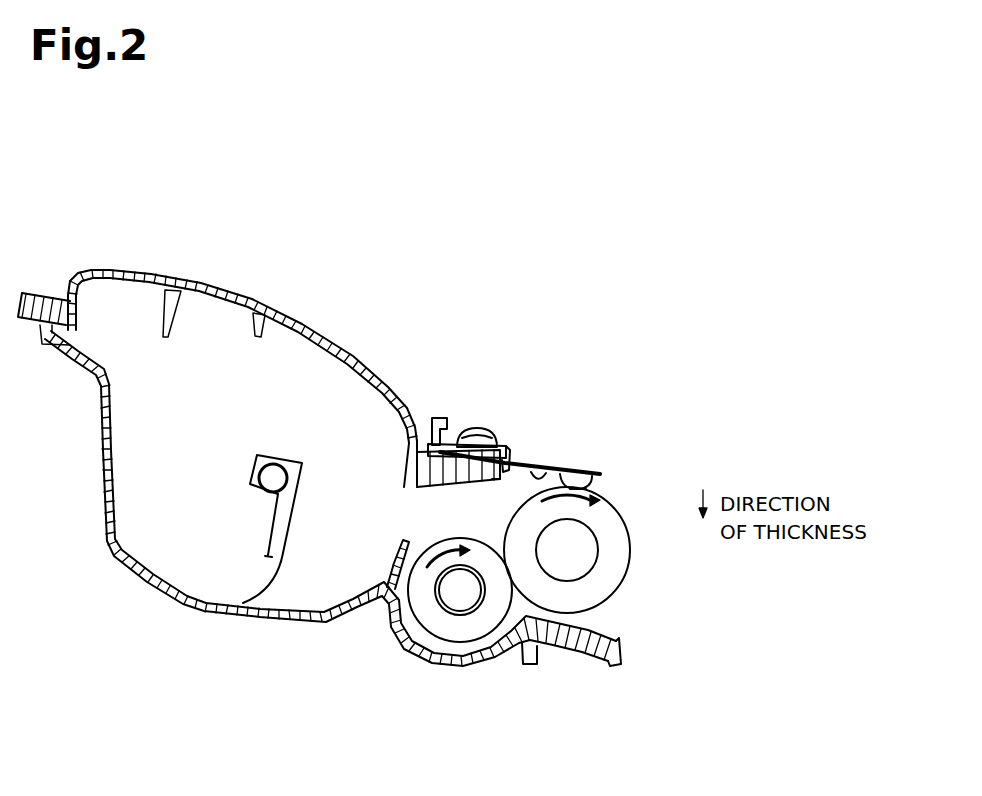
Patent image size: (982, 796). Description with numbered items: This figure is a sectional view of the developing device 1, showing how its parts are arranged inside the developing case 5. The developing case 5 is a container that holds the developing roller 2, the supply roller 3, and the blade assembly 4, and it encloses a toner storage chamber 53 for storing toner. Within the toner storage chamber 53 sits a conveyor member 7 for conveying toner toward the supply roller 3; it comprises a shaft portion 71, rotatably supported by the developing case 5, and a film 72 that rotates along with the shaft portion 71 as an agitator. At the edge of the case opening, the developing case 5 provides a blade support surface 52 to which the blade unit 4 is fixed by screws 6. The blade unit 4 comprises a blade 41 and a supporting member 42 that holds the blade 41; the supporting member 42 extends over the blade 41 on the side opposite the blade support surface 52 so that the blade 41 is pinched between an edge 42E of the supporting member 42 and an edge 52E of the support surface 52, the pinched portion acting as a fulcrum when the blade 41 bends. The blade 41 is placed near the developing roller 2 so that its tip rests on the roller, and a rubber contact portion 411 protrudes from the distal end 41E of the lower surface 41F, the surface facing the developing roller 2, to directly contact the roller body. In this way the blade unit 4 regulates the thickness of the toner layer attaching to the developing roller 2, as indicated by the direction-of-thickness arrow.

The developing device 1 is at (263, 241).
The developing case 5 is at (88, 269).
The toner storage chamber 53 is at (179, 411).
The conveyor member 7 is at (253, 503).
The shaft portion 71 is at (258, 475).
The film 72 is at (275, 583).
The supporting member 42 is at (433, 463).
The edge of the supporting member 42E is at (516, 452).
The blade support surface 52 is at (420, 487).
The edge of the blade support surface 52E is at (505, 458).
The screw 6 is at (451, 414).
The blade assembly 4 is at (483, 413).
The blade 41 is at (527, 465).
The lower surface of the blade 41F is at (550, 466).
The distal end of the lower surface 41E is at (592, 472).
The contact portion 411 is at (585, 480).
The developing roller 2 is at (615, 578).
The supply roller 3 is at (462, 627).